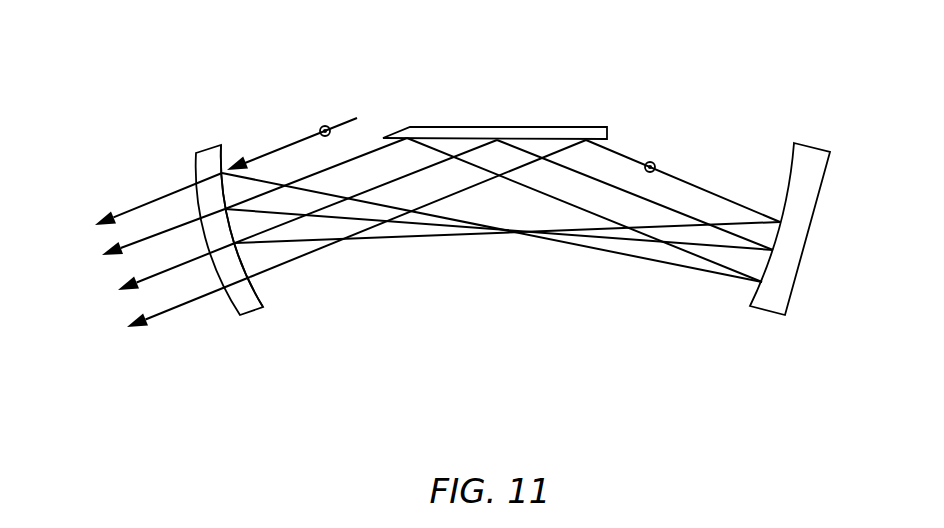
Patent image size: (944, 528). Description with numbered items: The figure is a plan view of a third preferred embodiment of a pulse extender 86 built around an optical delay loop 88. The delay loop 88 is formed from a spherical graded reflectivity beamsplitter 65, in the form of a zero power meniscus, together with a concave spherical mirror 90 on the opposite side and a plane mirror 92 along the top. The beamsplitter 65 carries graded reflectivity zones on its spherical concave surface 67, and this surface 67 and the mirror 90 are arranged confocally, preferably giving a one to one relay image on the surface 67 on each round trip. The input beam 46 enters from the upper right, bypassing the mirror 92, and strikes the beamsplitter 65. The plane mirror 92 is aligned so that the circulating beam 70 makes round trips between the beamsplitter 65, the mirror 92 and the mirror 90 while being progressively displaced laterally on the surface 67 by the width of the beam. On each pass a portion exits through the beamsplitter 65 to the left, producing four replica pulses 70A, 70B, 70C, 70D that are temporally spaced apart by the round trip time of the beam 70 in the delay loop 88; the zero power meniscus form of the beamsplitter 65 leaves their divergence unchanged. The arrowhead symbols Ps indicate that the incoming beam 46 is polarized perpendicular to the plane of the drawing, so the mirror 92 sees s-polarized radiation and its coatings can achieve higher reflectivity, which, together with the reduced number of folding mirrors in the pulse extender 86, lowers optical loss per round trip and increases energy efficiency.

The input beam 46 is at (282, 146).
The spherical graded reflectivity beamsplitter 65 is at (268, 327).
The spherical concave surface 67 is at (259, 291).
The circulating beam 70 is at (387, 240).
The replica pulse 70A is at (173, 190).
The replica pulse 70B is at (153, 235).
The replica pulse 70C is at (200, 262).
The replica pulse 70D is at (177, 308).
The pulse extender 86 is at (603, 393).
The delay loop 88 is at (470, 281).
The concave spherical mirror 90 is at (758, 304).
The plane mirror 92 is at (500, 134).
The polarization arrowhead Ps is at (327, 126).